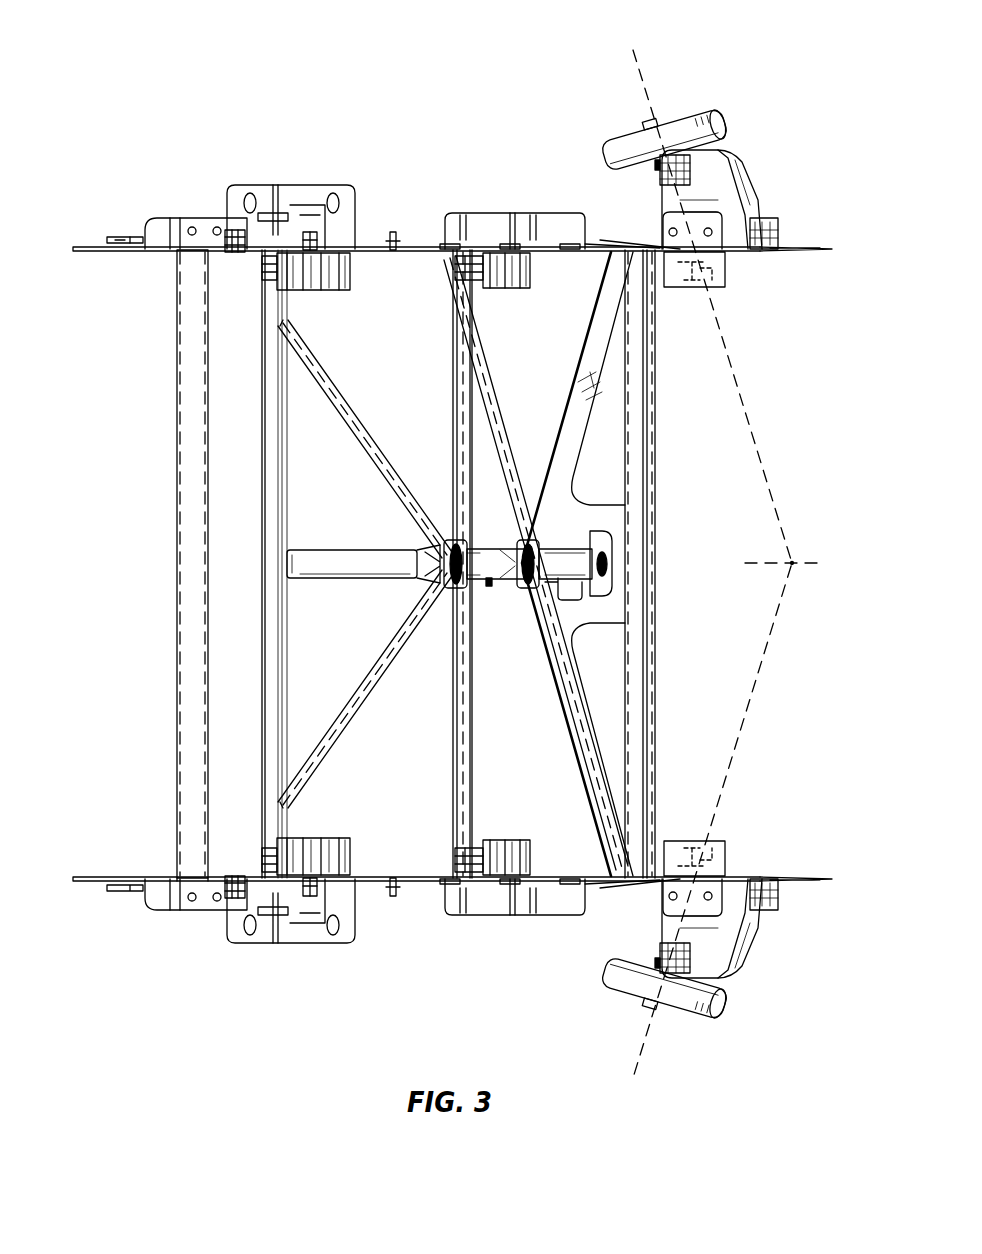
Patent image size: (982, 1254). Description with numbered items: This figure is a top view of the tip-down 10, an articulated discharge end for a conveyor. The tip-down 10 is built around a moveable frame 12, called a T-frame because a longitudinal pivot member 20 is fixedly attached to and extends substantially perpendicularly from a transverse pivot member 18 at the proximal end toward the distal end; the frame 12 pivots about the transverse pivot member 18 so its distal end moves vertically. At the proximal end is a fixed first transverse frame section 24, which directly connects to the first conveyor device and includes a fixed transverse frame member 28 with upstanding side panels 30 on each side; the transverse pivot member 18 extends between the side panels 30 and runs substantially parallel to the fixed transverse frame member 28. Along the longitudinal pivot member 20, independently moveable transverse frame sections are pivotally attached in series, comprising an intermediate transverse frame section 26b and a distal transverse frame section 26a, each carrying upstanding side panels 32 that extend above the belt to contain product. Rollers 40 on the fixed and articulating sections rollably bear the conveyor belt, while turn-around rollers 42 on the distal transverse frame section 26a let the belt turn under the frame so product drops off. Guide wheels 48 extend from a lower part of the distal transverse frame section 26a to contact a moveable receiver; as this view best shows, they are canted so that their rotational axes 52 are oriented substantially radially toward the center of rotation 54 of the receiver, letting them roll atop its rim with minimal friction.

The tip-down 10 is at (157, 90).
The moveable frame 12 is at (238, 537).
The transverse pivot member 18 is at (268, 632).
The longitudinal pivot member 20 is at (358, 553).
The first transverse frame section 24 is at (160, 789).
The distal transverse frame section 26a is at (615, 530).
The intermediate transverse frame section 26b is at (458, 658).
The fixed transverse frame member 28 is at (190, 407).
The upstanding side panels 30 is at (88, 247).
The upstanding side panels 32 is at (817, 247).
The rollers 40 is at (300, 290).
The turn-around rollers 42 is at (718, 263).
The guide wheels 48 is at (690, 120).
The rotational axes 52 is at (624, 78).
The center of rotation 54 is at (793, 563).